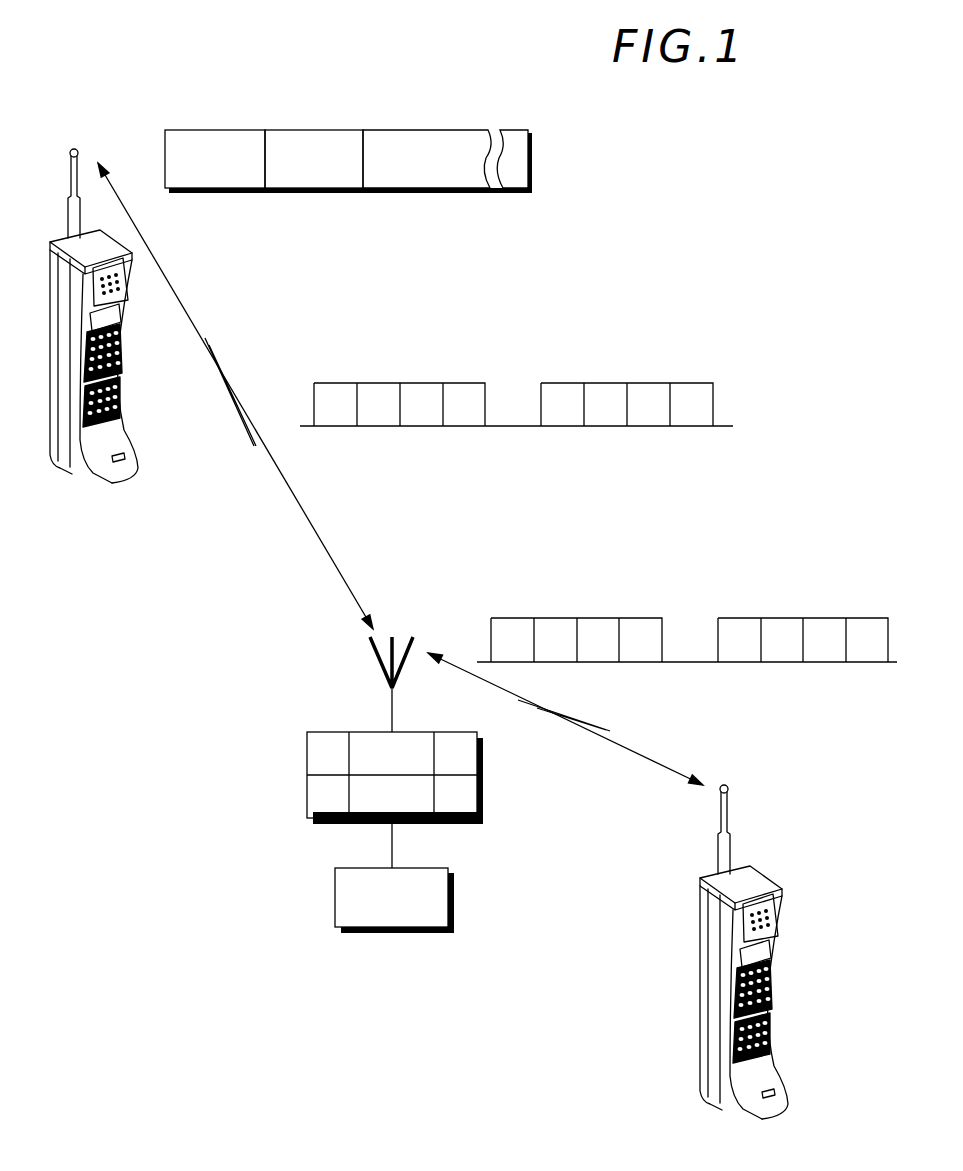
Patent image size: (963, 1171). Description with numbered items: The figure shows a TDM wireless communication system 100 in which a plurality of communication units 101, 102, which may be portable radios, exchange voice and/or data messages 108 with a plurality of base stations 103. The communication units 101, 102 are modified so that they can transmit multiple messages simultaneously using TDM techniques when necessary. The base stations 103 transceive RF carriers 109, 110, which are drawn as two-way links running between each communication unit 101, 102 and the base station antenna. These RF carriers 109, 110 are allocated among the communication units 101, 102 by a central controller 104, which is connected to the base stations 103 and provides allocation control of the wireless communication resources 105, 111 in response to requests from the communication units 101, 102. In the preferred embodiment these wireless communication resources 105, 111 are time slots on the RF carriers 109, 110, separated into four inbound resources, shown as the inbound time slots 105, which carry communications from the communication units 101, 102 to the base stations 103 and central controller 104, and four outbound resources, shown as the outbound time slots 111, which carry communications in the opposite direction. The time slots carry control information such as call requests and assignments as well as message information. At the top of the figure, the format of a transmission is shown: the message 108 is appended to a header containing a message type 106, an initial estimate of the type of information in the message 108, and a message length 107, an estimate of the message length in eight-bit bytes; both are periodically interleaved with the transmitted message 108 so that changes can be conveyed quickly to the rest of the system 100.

The TDM wireless communication system 100 is at (746, 116).
The communication unit 101 is at (121, 373).
The communication unit 102 is at (771, 990).
The base stations 103 is at (484, 776).
The central controller 104 is at (455, 896).
The wireless communication resources 105 is at (400, 382).
The message type 106 is at (209, 128).
The message length 107 is at (317, 128).
The message 108 is at (434, 128).
The RF carrier 109 is at (180, 306).
The RF carrier 110 is at (625, 748).
The wireless communication resources 111 is at (577, 617).